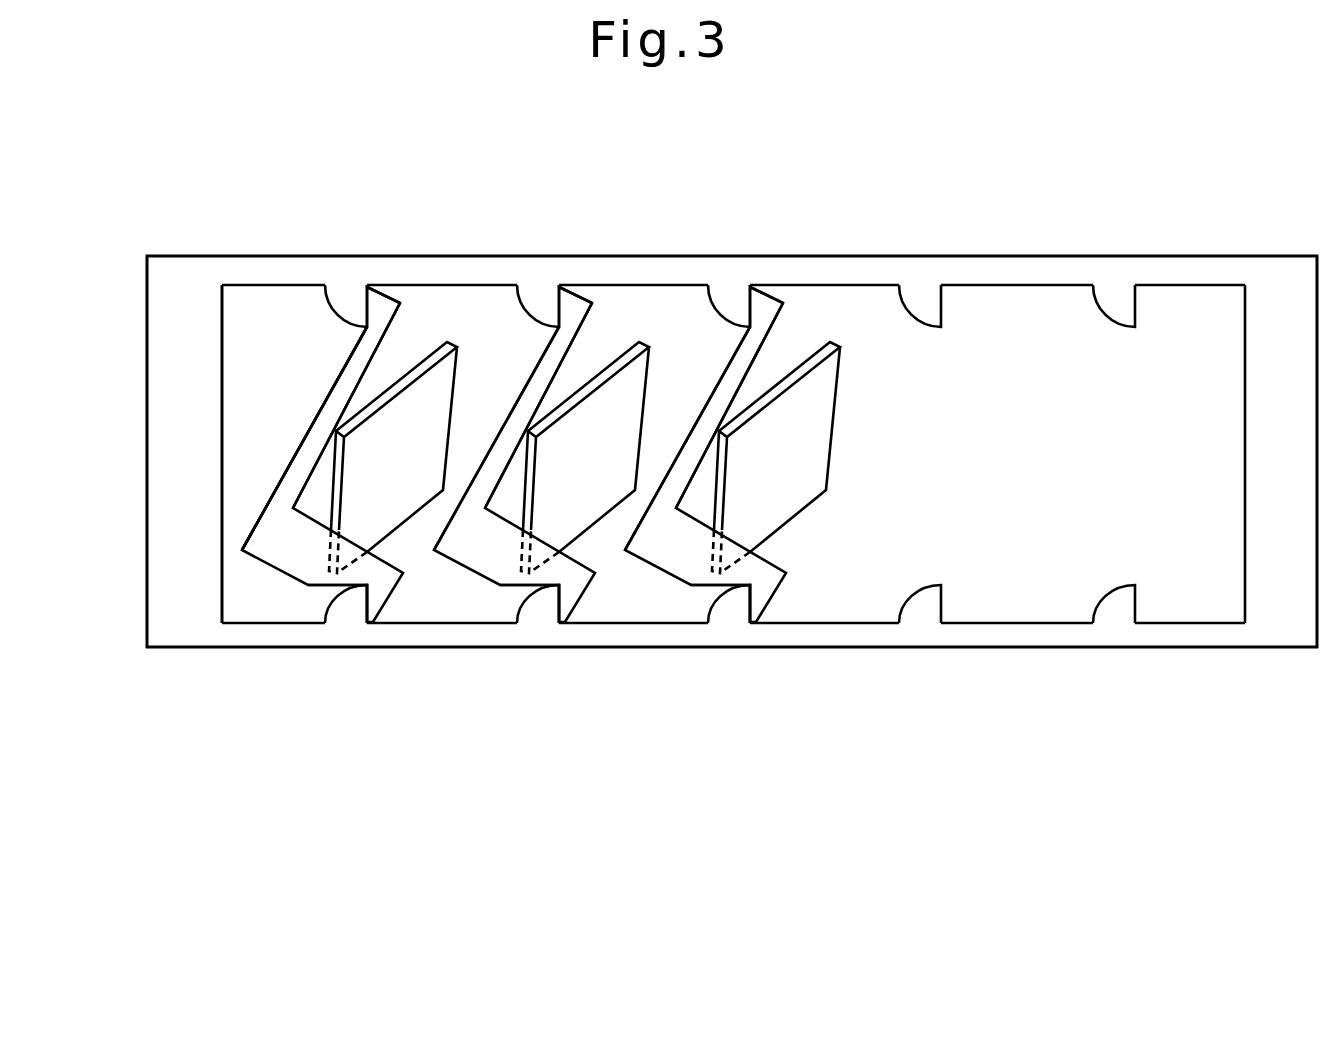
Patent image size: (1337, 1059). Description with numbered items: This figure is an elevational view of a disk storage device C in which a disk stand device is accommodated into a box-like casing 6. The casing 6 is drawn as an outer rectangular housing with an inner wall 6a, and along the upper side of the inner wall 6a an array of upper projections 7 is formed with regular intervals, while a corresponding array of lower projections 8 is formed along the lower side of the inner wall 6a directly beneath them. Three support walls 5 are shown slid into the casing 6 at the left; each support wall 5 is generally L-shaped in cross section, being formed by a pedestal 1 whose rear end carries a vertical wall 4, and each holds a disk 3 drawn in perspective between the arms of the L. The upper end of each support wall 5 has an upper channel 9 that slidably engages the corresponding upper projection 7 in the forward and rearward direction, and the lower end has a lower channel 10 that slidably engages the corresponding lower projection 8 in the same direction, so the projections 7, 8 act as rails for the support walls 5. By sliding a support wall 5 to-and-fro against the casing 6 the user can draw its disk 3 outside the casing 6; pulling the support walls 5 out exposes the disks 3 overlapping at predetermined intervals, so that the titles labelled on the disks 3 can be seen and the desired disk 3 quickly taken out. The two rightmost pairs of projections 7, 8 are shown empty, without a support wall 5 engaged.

The disk storage device C is at (727, 221).
The pedestal 1 is at (287, 563).
The disk 3 is at (410, 498).
The vertical wall 4 is at (310, 425).
The support wall 5 is at (240, 482).
The box-like casing 6 is at (285, 256).
The inner wall 6a is at (222, 587).
The upper projection 7 is at (340, 302).
The lower projection 8 is at (343, 607).
The upper channel 9 is at (366, 292).
The lower channel 10 is at (317, 588).